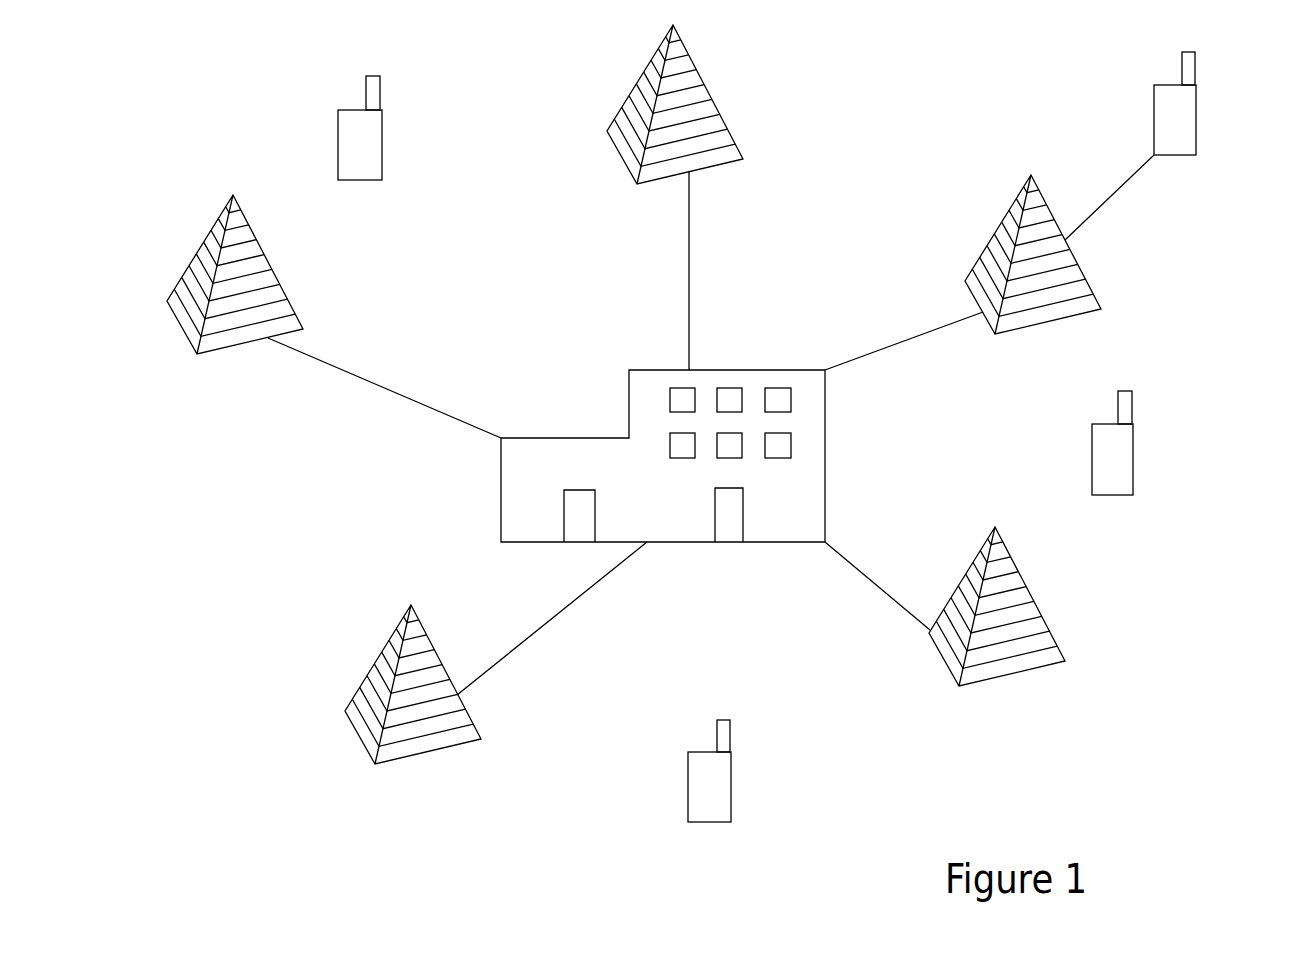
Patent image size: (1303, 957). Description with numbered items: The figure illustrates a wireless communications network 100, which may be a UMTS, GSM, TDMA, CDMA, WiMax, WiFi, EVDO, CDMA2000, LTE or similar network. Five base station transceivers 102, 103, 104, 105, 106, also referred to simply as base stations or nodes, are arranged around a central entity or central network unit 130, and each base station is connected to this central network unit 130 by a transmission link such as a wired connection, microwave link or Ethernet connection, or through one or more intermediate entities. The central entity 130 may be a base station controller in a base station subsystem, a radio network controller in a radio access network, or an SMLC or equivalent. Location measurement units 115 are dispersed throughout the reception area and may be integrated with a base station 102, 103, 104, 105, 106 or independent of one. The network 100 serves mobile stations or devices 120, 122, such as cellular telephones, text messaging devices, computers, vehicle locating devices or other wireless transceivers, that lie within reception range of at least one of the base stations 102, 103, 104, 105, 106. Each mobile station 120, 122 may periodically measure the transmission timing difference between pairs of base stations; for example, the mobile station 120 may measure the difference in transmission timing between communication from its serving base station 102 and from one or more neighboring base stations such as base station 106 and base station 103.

The wireless communications network 100 is at (143, 115).
The base station 102 is at (675, 104).
The base station 103 is at (1033, 267).
The base station 104 is at (997, 619).
The base station 105 is at (413, 703).
The base station 106 is at (235, 294).
The location measurement unit 115 is at (1196, 118).
The mobile station 120 is at (382, 142).
The mobile station 122 is at (731, 783).
The central network unit 130 is at (825, 488).